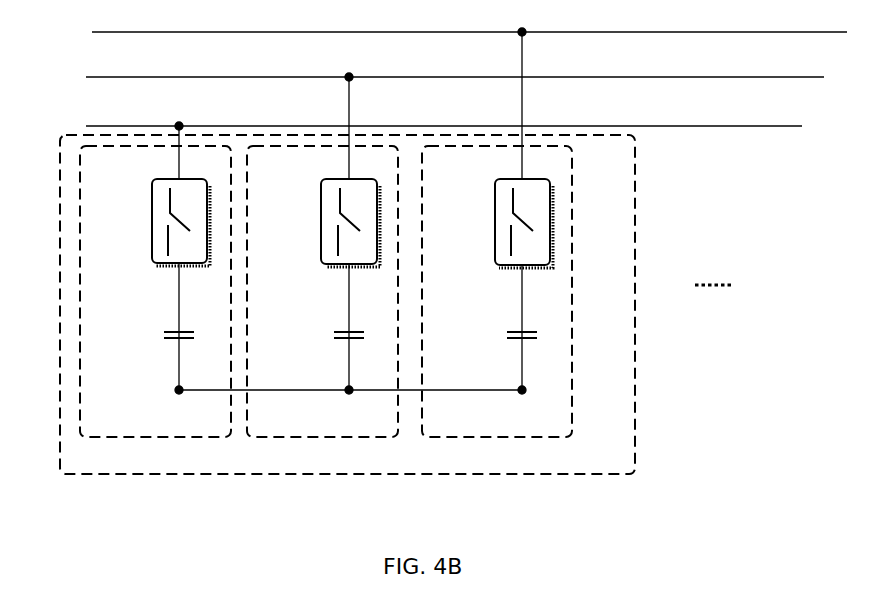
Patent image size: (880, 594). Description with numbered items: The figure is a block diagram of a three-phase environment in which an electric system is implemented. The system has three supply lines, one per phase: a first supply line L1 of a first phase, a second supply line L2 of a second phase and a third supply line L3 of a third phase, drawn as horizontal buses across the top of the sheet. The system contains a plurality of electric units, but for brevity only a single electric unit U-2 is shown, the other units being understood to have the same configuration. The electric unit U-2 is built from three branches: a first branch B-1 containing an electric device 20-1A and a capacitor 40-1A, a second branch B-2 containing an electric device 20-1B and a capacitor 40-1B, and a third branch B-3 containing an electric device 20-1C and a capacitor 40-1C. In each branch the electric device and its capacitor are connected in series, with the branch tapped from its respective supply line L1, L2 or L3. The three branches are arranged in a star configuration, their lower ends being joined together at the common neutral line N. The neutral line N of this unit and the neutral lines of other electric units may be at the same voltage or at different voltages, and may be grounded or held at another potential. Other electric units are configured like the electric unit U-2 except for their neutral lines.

The first supply line L1 is at (412, 127).
The second supply line L2 is at (423, 78).
The third supply line L3 is at (435, 33).
The neutral line N is at (350, 408).
The electric unit U-2 is at (96, 476).
The first branch B-1 is at (80, 338).
The second branch B-2 is at (282, 439).
The third branch B-3 is at (573, 268).
The electric device 20-1A is at (162, 180).
The electric device 20-1B is at (332, 180).
The electric device 20-1C is at (500, 180).
The capacitor 40-1A is at (172, 332).
The capacitor 40-1B is at (340, 332).
The capacitor 40-1C is at (514, 332).